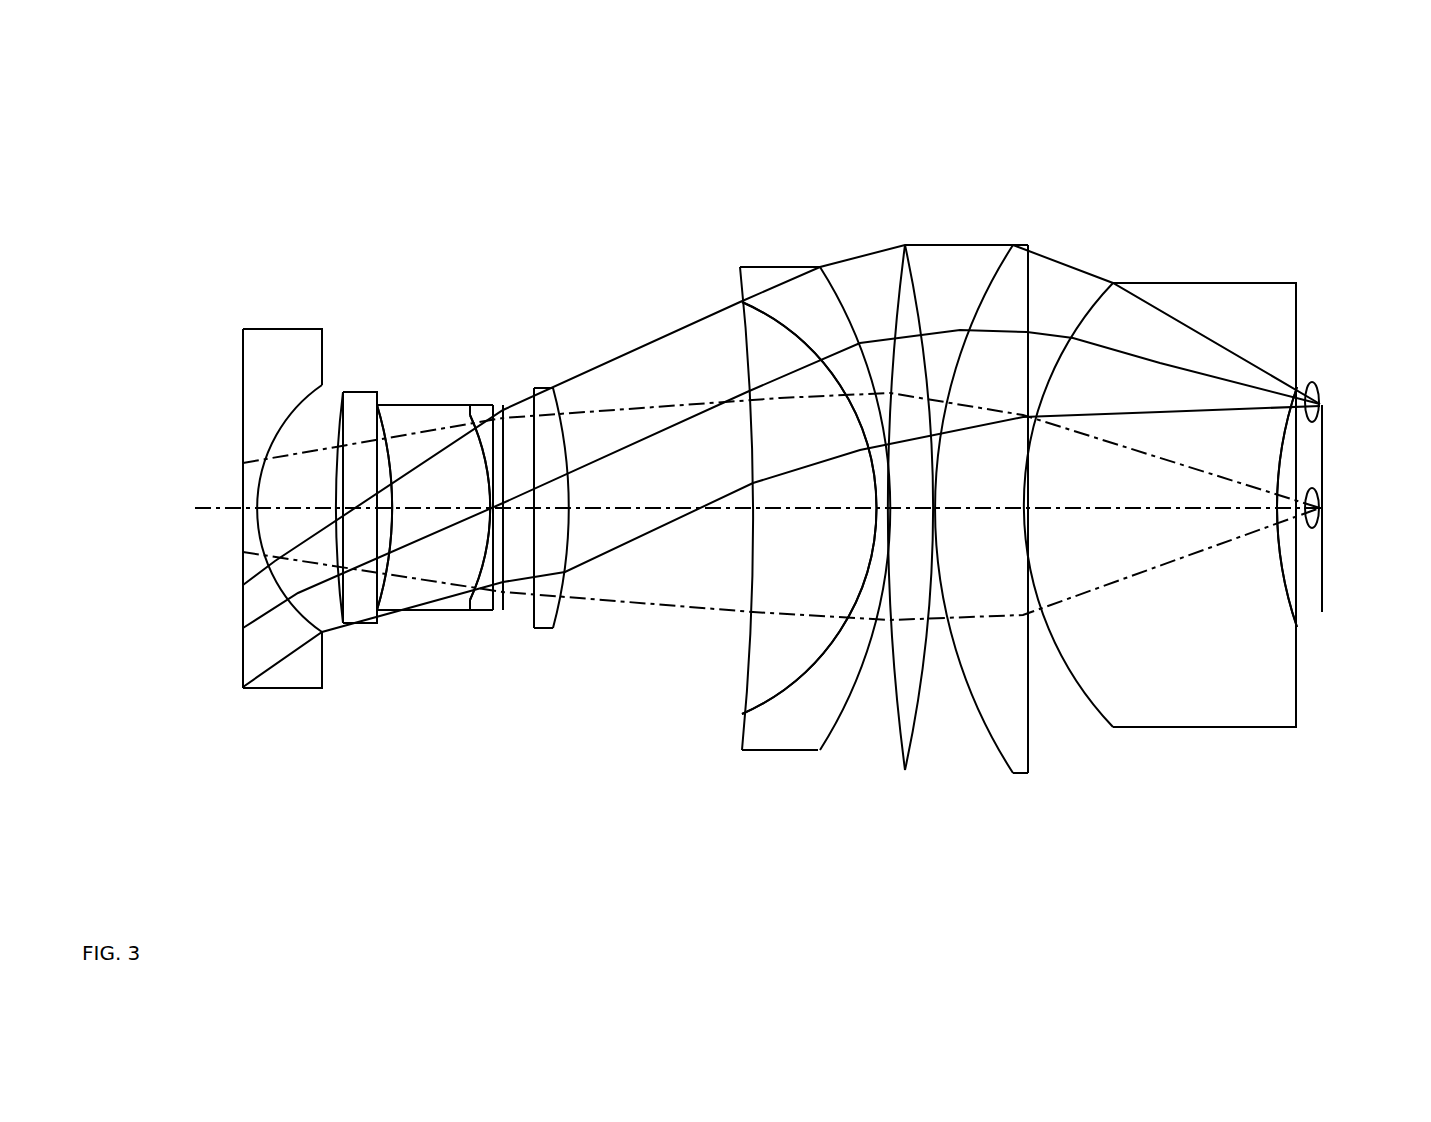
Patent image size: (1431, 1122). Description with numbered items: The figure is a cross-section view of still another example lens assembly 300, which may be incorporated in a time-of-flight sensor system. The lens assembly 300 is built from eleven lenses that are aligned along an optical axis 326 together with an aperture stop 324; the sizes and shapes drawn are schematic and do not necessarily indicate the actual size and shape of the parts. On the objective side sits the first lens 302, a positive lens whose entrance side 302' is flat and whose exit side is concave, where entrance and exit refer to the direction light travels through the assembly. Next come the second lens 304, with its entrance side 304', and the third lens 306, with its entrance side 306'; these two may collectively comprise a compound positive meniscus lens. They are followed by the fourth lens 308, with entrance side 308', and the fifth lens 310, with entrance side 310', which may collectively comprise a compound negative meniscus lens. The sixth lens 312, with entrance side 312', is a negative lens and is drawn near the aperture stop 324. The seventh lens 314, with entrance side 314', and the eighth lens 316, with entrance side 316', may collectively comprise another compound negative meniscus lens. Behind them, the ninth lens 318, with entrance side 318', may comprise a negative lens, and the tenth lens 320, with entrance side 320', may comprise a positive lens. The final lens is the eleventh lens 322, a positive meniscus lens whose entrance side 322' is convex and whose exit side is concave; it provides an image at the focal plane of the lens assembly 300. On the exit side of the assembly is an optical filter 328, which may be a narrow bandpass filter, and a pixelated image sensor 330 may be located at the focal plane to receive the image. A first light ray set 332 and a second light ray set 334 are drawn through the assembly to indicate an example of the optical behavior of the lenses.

The lens assembly 300 is at (197, 67).
The first lens 302 is at (238, 509).
The entrance side of first lens 302' is at (199, 534).
The second lens 304 is at (325, 516).
The entrance side of second lens 304' is at (275, 602).
The third lens 306 is at (481, 562).
The entrance side of third lens 306' is at (413, 591).
The fourth lens 308 is at (481, 470).
The entrance side of fourth lens 308' is at (475, 611).
The fifth lens 310 is at (577, 521).
The entrance side of fifth lens 310' is at (569, 610).
The sixth lens 312 is at (599, 479).
The entrance side of sixth lens 312' is at (587, 538).
The seventh lens 314 is at (762, 463).
The entrance side of seventh lens 314' is at (700, 508).
The eighth lens 316 is at (805, 519).
The entrance side of eighth lens 316' is at (798, 571).
The ninth lens 318 is at (903, 525).
The entrance side of ninth lens 318' is at (854, 578).
The tenth lens 320 is at (1034, 498).
The entrance side of tenth lens 320' is at (970, 516).
The eleventh lens 322 is at (1216, 495).
The entrance side of eleventh lens 322' is at (1099, 533).
The aperture stop 324 is at (503, 414).
The optical axis 326 is at (240, 497).
The optical filter 328 is at (1298, 548).
The pixelated image sensor 330 is at (1323, 478).
The first light ray set 332 is at (1316, 538).
The second light ray set 334 is at (1314, 380).